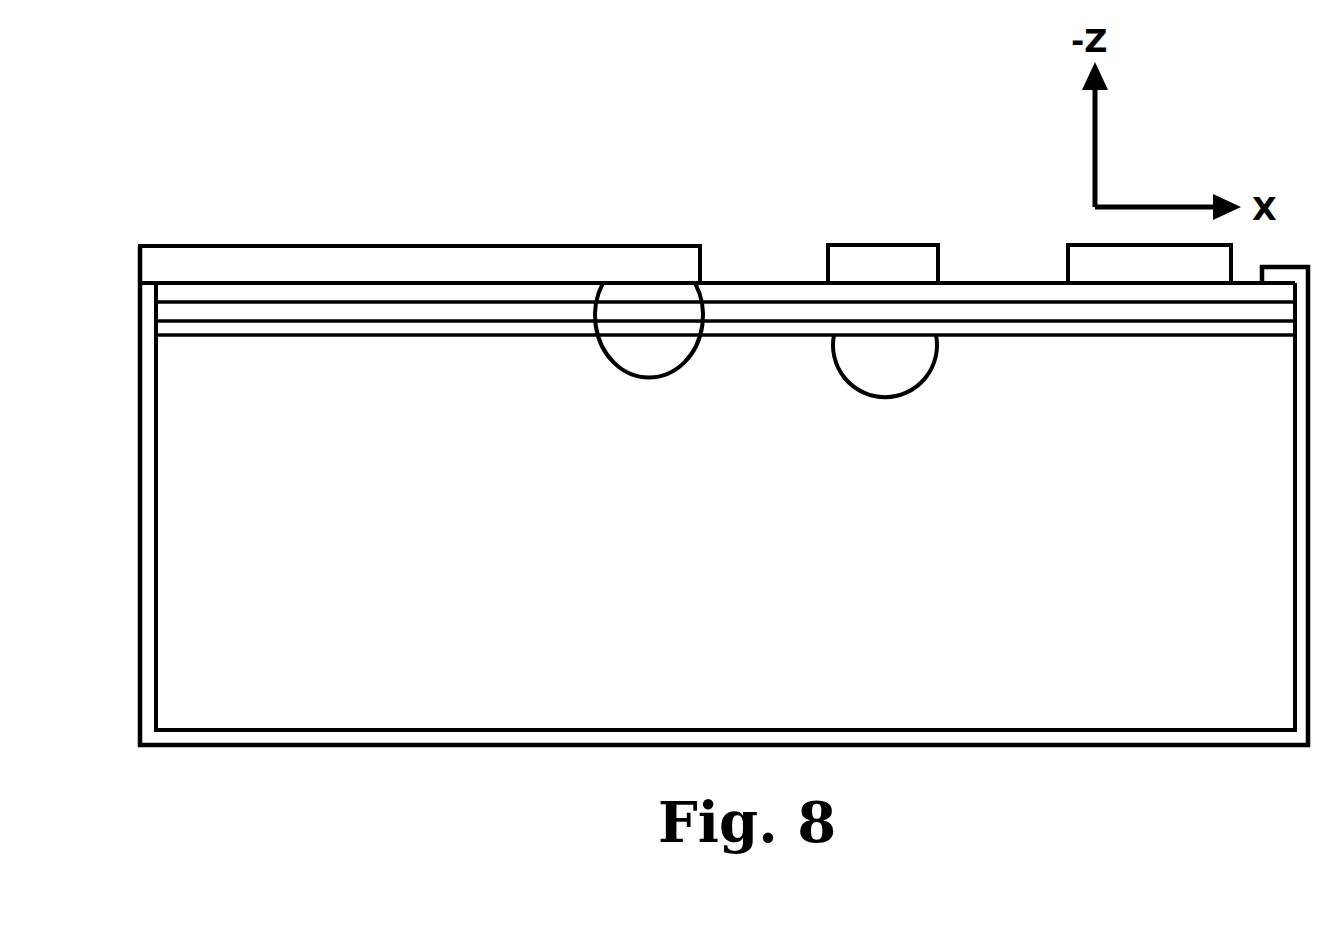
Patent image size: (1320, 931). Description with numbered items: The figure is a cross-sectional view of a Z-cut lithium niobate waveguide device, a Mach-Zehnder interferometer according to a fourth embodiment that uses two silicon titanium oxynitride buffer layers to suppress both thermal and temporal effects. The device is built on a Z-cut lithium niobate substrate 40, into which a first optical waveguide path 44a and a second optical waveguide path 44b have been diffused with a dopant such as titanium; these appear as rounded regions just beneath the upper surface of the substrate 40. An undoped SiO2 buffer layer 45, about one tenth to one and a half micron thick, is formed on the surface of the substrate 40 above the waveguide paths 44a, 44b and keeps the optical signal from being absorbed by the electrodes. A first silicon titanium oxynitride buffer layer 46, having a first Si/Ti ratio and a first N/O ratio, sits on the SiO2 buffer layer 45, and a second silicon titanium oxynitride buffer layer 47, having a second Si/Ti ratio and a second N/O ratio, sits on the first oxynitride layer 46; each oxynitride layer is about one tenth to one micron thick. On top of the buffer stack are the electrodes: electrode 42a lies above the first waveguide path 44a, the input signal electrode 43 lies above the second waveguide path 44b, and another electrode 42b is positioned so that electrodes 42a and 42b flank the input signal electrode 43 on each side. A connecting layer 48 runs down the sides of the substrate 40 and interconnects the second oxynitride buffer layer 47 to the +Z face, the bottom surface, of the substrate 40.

The Z-cut lithium niobate substrate 40 is at (237, 394).
The electrode 42a is at (420, 264).
The electrode 42b is at (1149, 264).
The input signal electrode 43 is at (883, 264).
The first optical waveguide path 44a is at (649, 332).
The second optical waveguide path 44b is at (885, 366).
The undoped SiO2 buffer layer 45 is at (343, 328).
The first silicon titanium oxynitride buffer layer 46 is at (395, 307).
The second silicon titanium oxynitride buffer layer 47 is at (445, 292).
The connecting layer 48 is at (980, 745).